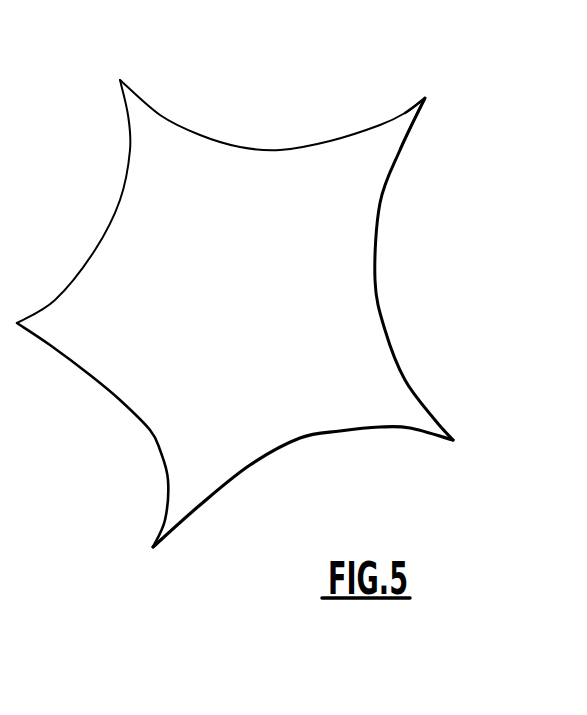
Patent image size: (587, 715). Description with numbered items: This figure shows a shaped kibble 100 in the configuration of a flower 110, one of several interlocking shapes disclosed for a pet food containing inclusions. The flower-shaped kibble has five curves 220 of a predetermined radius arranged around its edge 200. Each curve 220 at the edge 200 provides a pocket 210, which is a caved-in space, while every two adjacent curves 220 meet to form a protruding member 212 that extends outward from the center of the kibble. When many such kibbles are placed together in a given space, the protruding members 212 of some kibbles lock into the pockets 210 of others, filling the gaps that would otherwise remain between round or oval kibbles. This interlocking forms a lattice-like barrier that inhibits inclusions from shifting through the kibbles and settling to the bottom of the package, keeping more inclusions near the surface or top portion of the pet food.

The shaped kibble 100 is at (266, 329).
The flower 110 is at (266, 273).
The edge 200 is at (380, 203).
The pocket 210 is at (470, 304).
The protruding member 212 is at (425, 98).
The curve 220 is at (420, 398).